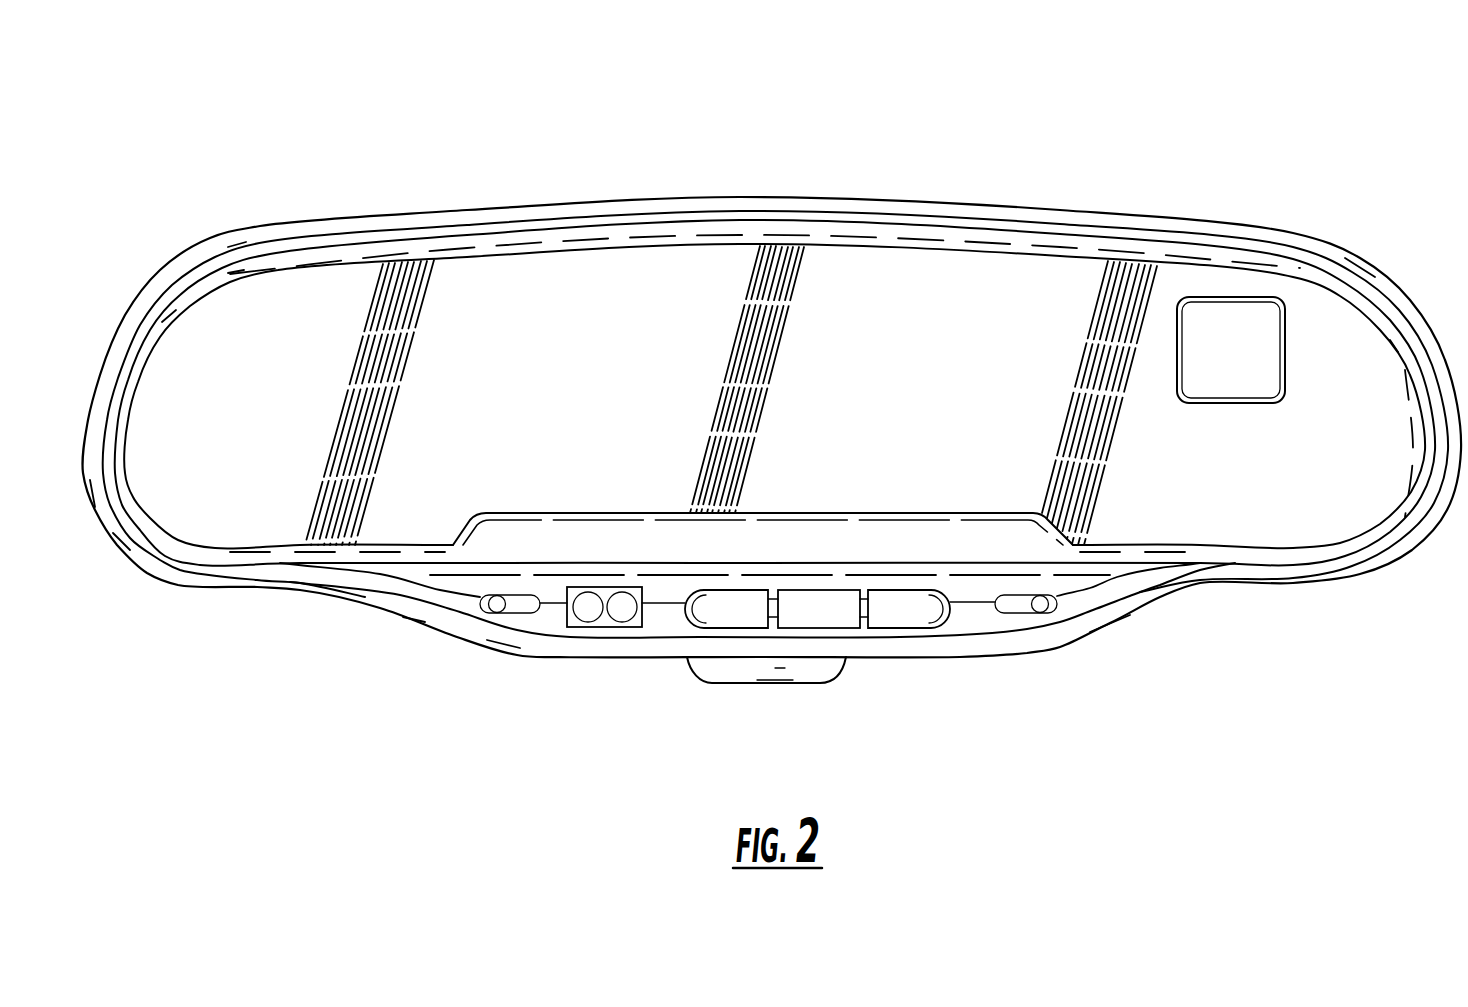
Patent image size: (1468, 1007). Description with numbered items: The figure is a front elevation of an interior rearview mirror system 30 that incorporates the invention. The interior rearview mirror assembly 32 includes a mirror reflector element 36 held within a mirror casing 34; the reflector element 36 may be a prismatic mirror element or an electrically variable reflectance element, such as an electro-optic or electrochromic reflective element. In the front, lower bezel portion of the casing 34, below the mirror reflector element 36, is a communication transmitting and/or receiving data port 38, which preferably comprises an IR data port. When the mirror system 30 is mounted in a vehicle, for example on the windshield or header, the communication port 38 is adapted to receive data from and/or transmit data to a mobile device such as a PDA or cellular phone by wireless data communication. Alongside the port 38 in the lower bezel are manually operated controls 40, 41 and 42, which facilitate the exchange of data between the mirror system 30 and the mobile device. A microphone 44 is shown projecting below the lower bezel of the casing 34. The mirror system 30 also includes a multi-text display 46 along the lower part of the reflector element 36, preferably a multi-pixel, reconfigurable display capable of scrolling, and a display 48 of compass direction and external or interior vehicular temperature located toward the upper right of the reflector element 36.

The interior rearview mirror system 30 is at (714, 75).
The interior rearview mirror assembly 32 is at (213, 253).
The mirror casing 34 is at (210, 553).
The mirror reflector element 36 is at (565, 327).
The communication data port 38 is at (605, 608).
The manually operated control 40 is at (723, 627).
The manually operated control 41 is at (842, 622).
The manually operated control 42 is at (927, 620).
The microphone 44 is at (810, 683).
The multi-text display 46 is at (868, 520).
The compass / temperature display 48 is at (1263, 310).